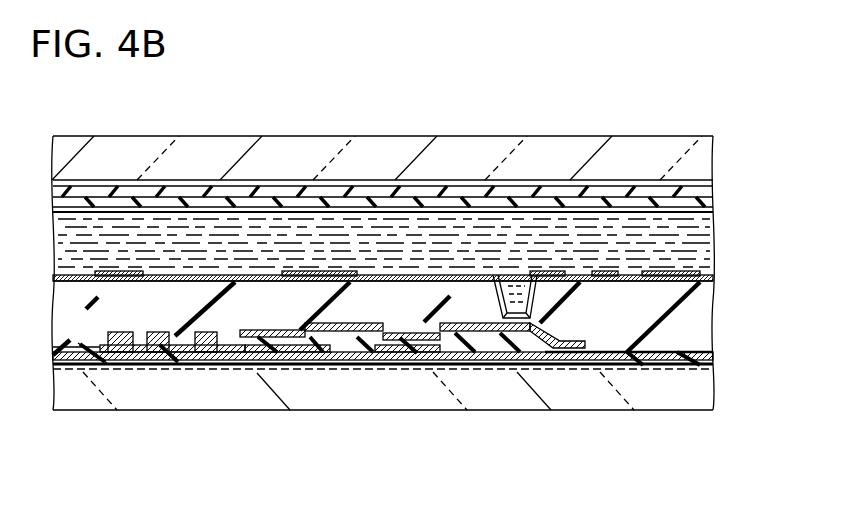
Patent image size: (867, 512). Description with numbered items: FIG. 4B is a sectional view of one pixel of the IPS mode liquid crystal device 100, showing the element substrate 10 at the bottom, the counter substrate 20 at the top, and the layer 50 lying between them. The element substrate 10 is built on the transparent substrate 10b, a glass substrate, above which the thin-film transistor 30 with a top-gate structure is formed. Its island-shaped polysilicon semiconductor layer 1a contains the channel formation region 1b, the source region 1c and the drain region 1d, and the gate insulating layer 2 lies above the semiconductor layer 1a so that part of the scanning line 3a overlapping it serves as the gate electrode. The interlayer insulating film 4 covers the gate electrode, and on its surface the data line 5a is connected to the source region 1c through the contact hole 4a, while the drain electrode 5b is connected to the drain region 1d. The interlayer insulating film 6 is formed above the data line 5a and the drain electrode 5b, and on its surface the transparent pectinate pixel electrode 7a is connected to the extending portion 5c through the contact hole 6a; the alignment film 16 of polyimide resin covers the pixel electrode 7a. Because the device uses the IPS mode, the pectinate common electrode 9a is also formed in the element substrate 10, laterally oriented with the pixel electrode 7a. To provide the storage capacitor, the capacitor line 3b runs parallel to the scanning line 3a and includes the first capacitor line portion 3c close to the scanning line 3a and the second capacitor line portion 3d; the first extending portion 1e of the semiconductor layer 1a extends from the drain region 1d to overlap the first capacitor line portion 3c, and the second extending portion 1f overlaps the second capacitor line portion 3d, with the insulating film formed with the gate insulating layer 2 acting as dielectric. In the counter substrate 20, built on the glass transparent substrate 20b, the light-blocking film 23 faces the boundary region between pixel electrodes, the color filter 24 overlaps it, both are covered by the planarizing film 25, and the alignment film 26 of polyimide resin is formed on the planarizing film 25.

The liquid crystal device 100 is at (648, 109).
The counter substrate 20 is at (774, 137).
The transparent substrate 20b is at (718, 137).
The light-blocking film 23 is at (255, 182).
The color filter 24 is at (385, 192).
The planarizing film 25 is at (515, 196).
The liquid crystal layer 50 is at (718, 213).
The alignment film 26 is at (384, 214).
The alignment film 16 is at (452, 273).
The common electrode 9a is at (607, 272).
The interlayer insulating film 6 is at (718, 283).
The interlayer insulating film 4 is at (705, 357).
The gate insulating layer 2 is at (712, 367).
The element substrate 10 is at (774, 270).
The transparent substrate 10b is at (718, 371).
The contact hole 4a is at (108, 333).
The data line 5a is at (120, 332).
The drain electrode 5b is at (200, 332).
The extending portion 5c is at (453, 325).
The scanning line 3a is at (165, 334).
The capacitor line 3b is at (505, 462).
The first capacitor line portion 3c is at (335, 372).
The second capacitor line portion 3d is at (497, 372).
The pixel electrode 7a is at (383, 282).
The contact hole 6a is at (546, 299).
The semiconductor layer 1a is at (232, 375).
The channel formation region 1b is at (170, 372).
The source region 1c is at (123, 370).
The drain region 1d is at (245, 372).
The first extending portion 1e is at (330, 372).
The second extending portion 1f is at (543, 372).
The thin-film transistor 30 is at (141, 377).